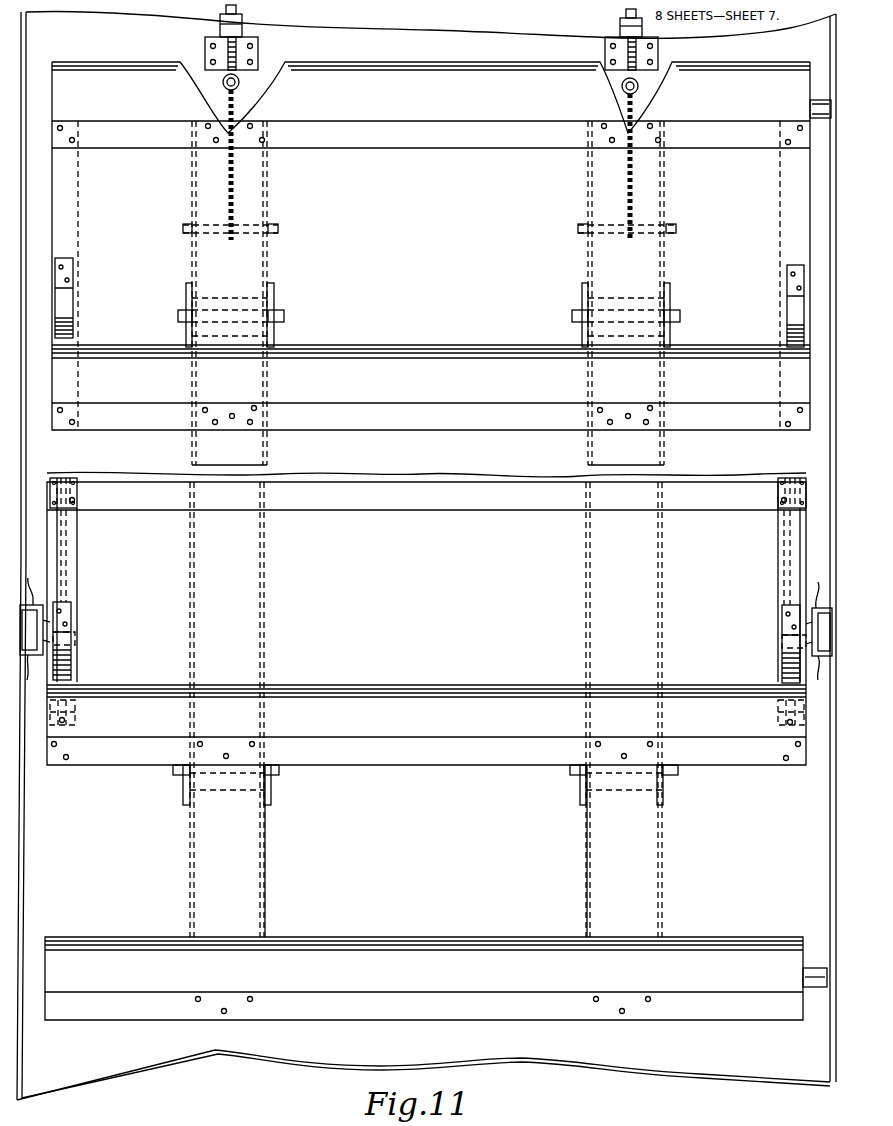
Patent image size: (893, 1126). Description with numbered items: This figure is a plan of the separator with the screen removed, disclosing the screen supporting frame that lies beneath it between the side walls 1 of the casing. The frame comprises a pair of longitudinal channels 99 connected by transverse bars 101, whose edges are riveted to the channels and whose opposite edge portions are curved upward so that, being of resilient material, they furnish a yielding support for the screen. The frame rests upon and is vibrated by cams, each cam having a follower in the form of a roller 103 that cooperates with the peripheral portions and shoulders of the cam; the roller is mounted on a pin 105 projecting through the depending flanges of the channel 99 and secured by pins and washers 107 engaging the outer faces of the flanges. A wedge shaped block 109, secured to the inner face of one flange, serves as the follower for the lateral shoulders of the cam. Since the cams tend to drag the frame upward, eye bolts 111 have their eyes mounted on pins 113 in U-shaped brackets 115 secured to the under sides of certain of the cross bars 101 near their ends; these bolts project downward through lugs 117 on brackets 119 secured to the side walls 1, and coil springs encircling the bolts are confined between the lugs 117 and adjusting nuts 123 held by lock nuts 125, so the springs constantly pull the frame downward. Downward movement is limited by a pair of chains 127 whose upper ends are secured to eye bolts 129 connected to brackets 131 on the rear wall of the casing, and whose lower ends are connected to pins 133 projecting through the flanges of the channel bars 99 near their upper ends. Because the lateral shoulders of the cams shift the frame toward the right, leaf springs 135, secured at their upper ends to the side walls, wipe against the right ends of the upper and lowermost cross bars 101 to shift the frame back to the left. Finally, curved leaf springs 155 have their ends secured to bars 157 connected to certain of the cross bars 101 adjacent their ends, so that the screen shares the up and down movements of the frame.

The side walls 1 is at (20, 335).
The longitudinal channels 99 is at (262, 888).
The transverse bars 101 is at (128, 62).
The roller 103 is at (242, 298).
The pin 105 is at (284, 316).
The pins and washers 107 is at (186, 306).
The wedge shaped block 109 is at (258, 375).
The eye bolts 111 is at (66, 545).
The pins 113 is at (73, 493).
The U-shaped brackets 115 is at (76, 504).
The lugs 117 is at (74, 646).
The brackets 119 is at (429, 616).
The adjusting nuts 123 is at (76, 710).
The lock nuts 125 is at (66, 722).
The chains 127 is at (236, 112).
The eye bolts 129 is at (250, 53).
The brackets 131 is at (250, 34).
The pins 133 is at (280, 232).
The leaf springs 135 is at (820, 98).
The curved leaf spring 155 is at (73, 308).
The bars 157 is at (78, 220).